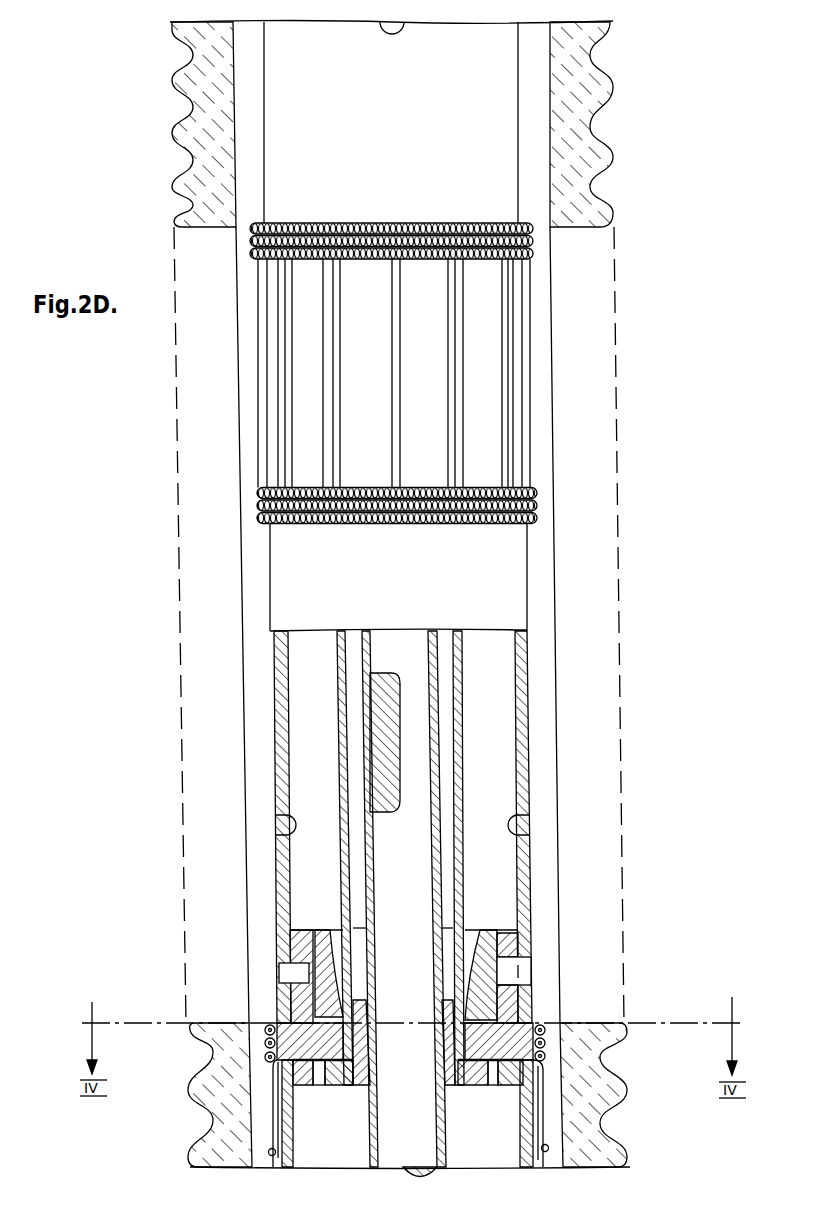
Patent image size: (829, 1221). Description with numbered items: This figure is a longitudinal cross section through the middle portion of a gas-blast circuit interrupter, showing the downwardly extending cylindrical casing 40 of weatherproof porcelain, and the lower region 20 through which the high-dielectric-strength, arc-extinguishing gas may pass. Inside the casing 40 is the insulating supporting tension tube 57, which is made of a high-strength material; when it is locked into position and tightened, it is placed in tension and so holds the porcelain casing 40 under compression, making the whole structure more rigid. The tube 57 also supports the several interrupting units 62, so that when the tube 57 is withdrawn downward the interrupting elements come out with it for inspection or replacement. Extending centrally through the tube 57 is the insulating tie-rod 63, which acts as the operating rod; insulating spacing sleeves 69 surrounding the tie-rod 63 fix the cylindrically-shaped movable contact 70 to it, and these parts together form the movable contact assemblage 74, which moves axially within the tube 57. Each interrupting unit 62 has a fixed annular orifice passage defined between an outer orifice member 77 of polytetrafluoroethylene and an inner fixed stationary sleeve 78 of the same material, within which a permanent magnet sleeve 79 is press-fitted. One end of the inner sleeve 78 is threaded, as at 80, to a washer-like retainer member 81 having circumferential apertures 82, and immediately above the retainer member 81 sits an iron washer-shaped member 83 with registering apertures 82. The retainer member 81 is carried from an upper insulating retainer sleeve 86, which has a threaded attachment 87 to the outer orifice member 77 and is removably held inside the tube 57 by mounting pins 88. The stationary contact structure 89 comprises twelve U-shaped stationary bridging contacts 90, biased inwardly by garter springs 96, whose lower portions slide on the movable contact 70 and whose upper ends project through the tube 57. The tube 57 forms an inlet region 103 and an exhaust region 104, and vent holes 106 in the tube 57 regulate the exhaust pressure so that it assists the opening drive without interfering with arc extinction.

The lower region 20 is at (260, 95).
The cylindrical casing 40 is at (613, 152).
The vent holes 106 is at (397, 33).
The garter springs 96 is at (533, 229).
The U-shaped stationary bridging contacts 90 is at (458, 338).
The insulating supporting tension tube 57 is at (527, 578).
The exhaust region 104 is at (325, 806).
The movable contact 70 is at (337, 706).
The movable contact assemblage 74 is at (356, 889).
The insulating tie-rod 63 is at (392, 674).
The insulating spacing sleeves 69 is at (371, 832).
The interrupting unit 62 is at (329, 919).
The outer orifice member 77 is at (481, 933).
The upper insulating retainer sleeve 86 is at (506, 934).
The mounting pins 88 is at (526, 972).
The threaded attachment 87 is at (531, 990).
The inner fixed stationary sleeve 78 is at (450, 948).
The permanent magnet sleeve 79 is at (443, 1027).
The washer-shaped member 83 is at (304, 1086).
The apertures 82 is at (326, 1086).
The retainer member 81 is at (340, 1086).
The threaded end 80 is at (464, 1086).
The inlet region 103 is at (347, 1145).
The stationary contact structure 89 is at (547, 1126).